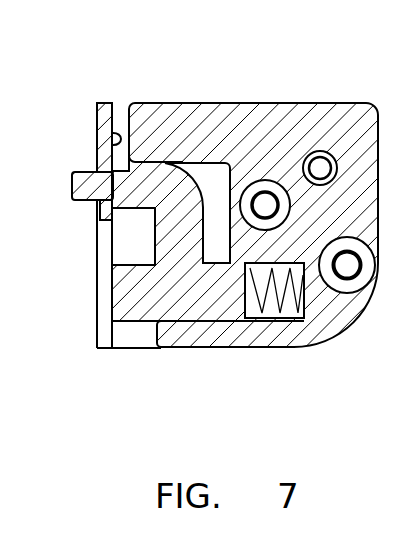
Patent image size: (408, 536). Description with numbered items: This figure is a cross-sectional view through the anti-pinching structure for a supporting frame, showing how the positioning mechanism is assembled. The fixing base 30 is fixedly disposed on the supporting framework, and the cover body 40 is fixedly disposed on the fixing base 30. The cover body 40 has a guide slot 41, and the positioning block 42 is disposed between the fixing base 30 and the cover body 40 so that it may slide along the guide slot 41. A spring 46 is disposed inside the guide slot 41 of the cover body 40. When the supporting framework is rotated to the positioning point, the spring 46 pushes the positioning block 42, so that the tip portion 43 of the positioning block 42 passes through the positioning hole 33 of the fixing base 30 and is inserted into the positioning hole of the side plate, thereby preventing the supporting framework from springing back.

The fixing base 30 is at (120, 348).
The positioning hole 33 is at (99, 208).
The cover body 40 is at (216, 84).
The guide slot 41 is at (251, 320).
The positioning block 42 is at (142, 345).
The tip portion 43 is at (73, 173).
The spring 46 is at (270, 314).